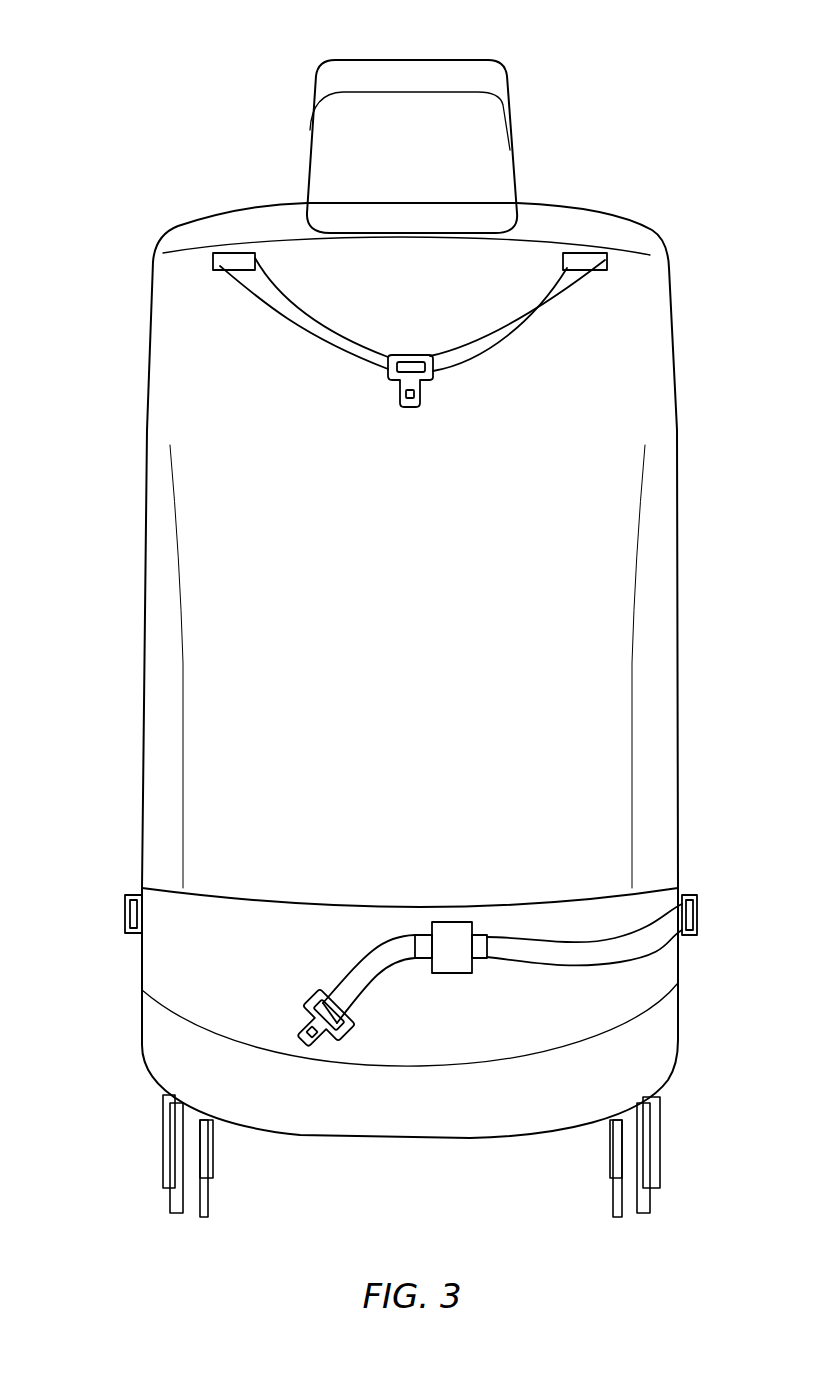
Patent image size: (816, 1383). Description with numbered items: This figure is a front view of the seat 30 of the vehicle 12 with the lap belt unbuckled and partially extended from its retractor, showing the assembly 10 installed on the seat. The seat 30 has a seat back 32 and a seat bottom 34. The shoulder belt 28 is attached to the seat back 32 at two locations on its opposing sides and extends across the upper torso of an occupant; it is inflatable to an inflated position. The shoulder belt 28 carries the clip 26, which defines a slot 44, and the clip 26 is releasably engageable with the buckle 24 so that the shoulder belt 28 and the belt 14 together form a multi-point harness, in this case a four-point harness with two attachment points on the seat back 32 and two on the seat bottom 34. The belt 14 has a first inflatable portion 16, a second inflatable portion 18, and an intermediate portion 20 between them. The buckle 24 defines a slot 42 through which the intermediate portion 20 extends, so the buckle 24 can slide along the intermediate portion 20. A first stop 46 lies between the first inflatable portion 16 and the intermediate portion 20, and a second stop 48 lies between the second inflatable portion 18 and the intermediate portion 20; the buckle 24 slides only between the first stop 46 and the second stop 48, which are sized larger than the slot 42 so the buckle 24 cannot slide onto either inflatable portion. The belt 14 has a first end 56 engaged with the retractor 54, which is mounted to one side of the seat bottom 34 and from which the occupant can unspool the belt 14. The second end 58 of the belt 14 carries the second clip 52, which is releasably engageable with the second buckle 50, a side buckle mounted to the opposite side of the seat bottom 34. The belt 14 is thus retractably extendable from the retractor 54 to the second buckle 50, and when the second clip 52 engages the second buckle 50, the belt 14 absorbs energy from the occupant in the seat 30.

The assembly 10 is at (88, 73).
The vehicle 12 is at (210, 143).
The belt 14 is at (575, 937).
The first inflatable portion 16 is at (363, 967).
The second inflatable portion 18 is at (510, 953).
The intermediate portion 20 is at (425, 955).
The buckle 24 is at (453, 977).
The clip 26 is at (427, 383).
The shoulder belt 28 is at (528, 318).
The seat 30 is at (608, 125).
The seat back 32 is at (632, 232).
The seat bottom 34 is at (678, 983).
The slot 42 is at (422, 947).
The slot 44 is at (413, 360).
The first stop 46 is at (427, 948).
The second stop 48 is at (477, 948).
The second buckle 50 is at (133, 892).
The second clip 52 is at (327, 1040).
The retractor 54 is at (697, 900).
The first end 56 is at (682, 903).
The second end 58 is at (330, 1005).